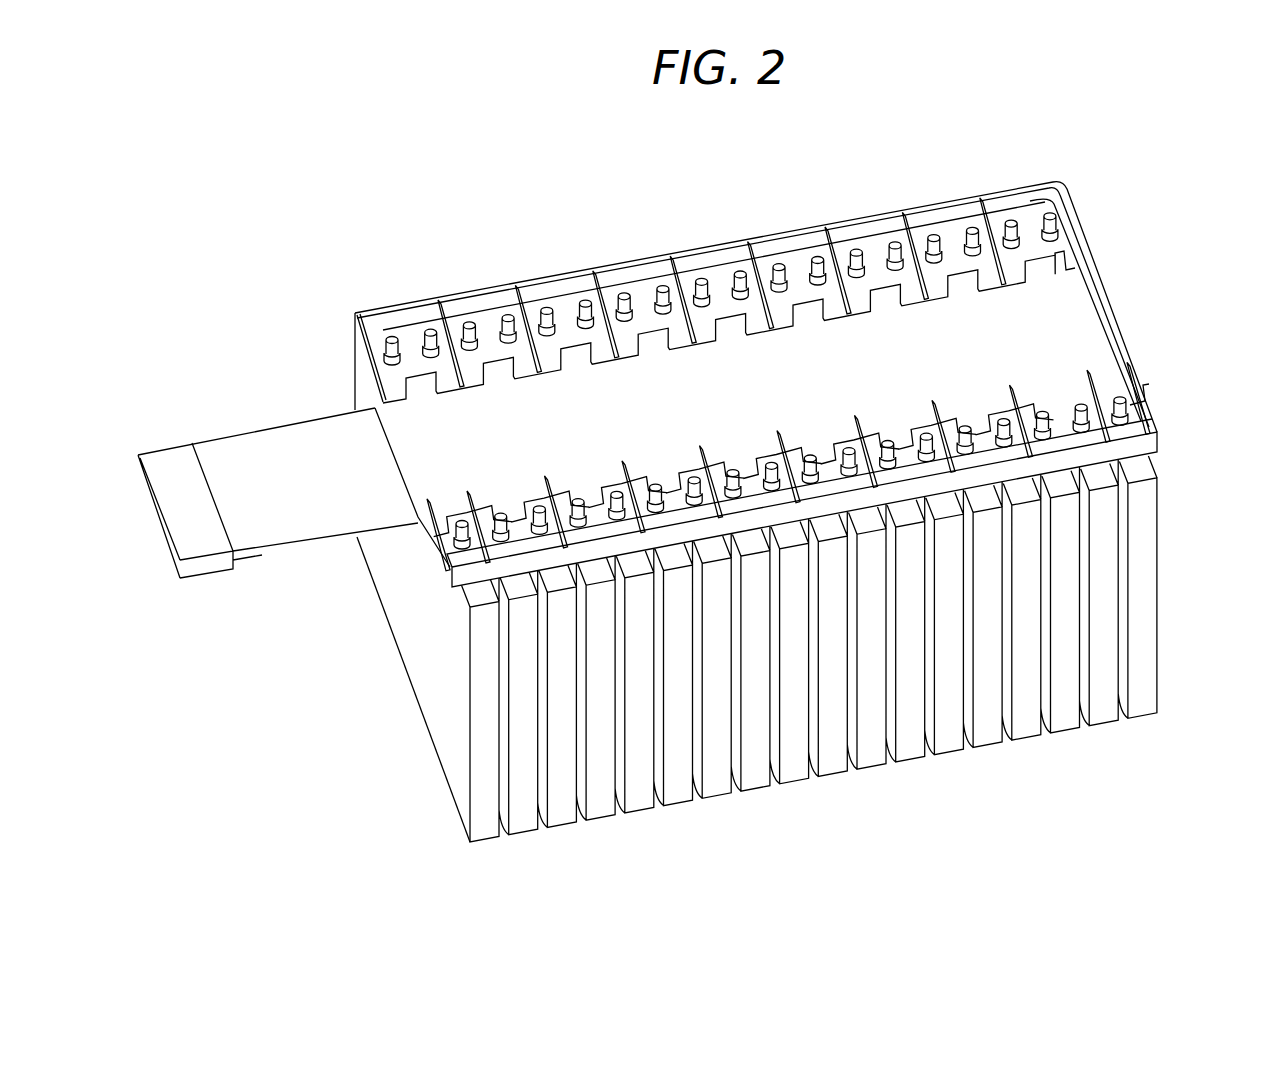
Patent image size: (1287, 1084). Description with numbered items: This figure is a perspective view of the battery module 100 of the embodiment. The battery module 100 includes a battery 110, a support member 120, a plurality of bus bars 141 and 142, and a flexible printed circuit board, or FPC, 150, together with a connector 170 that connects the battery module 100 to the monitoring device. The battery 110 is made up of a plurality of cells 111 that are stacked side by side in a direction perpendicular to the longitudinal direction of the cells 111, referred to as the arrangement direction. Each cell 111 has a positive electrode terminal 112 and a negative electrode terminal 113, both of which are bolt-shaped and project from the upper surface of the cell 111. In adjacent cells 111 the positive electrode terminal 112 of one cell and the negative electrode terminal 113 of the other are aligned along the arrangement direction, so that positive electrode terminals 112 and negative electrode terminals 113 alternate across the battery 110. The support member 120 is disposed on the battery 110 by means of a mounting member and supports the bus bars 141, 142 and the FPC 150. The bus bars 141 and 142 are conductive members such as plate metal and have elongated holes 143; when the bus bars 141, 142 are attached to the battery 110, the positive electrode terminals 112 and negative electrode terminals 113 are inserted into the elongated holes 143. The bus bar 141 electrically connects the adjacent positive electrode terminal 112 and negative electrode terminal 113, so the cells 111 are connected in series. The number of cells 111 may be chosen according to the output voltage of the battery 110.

The battery module 100 is at (290, 297).
The battery 110 is at (771, 708).
The cell 111 is at (1145, 693).
The positive electrode terminal 112 is at (380, 335).
The negative electrode terminal 113 is at (431, 337).
The support member 120 is at (553, 285).
The bus bar 141 is at (393, 333).
The bus bar 142 is at (1140, 433).
The elongated hole 143 is at (360, 380).
The flexible printed circuit board 150 is at (1058, 326).
The connector 170 is at (172, 477).